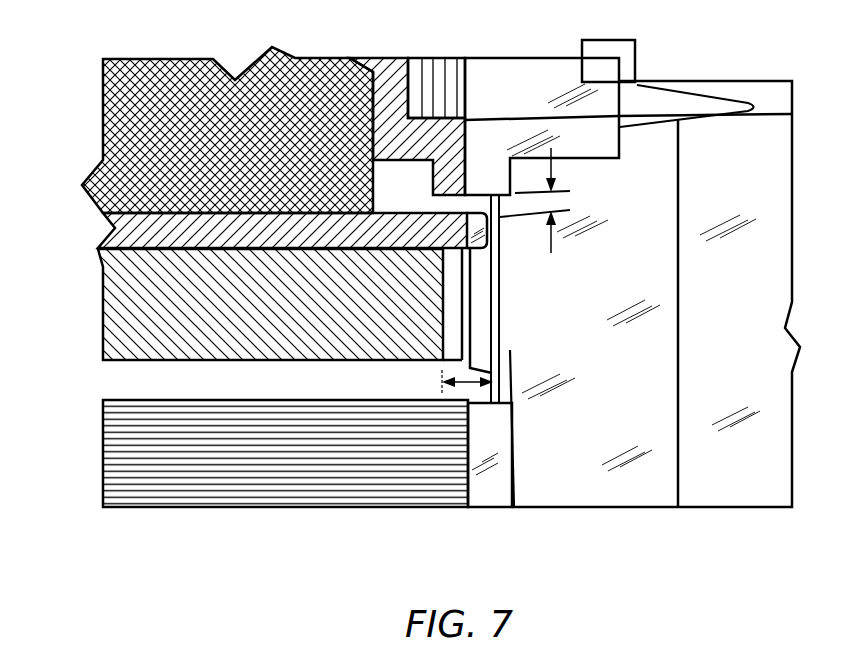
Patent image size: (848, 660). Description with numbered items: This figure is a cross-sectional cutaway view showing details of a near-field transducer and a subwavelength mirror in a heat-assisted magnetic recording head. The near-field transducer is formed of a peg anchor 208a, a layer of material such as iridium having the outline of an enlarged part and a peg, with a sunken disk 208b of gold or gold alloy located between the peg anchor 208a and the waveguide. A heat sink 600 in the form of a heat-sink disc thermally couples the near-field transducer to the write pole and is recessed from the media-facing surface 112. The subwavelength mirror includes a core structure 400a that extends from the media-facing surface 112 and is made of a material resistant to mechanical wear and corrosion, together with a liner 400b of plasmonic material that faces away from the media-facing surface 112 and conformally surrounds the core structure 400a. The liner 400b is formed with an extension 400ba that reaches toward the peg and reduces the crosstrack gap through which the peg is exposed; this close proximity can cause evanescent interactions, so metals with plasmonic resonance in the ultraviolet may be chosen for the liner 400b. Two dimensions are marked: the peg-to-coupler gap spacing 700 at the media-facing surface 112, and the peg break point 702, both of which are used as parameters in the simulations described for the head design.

The heat sink 600 is at (112, 95).
The peg anchor 208a is at (113, 229).
The sunken disk 208b is at (120, 313).
The media-facing surface 112 is at (620, 40).
The peg-to-coupler gap spacing 700 is at (536, 215).
The peg break point 702 is at (440, 382).
The extension 400ba is at (514, 507).
The liner 400b is at (622, 495).
The core structure 400a is at (747, 488).